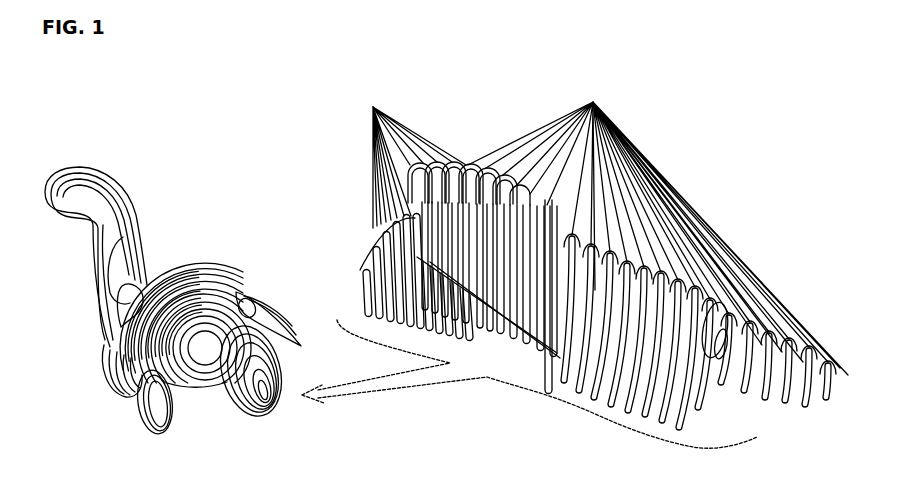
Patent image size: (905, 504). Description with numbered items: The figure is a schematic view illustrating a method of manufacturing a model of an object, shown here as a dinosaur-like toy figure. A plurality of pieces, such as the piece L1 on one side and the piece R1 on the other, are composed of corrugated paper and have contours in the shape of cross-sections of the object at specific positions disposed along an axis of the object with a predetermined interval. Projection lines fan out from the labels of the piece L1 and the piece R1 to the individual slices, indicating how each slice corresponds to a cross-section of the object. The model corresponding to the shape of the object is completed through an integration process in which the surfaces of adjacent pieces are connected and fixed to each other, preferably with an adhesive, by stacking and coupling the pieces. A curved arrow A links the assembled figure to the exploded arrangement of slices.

The direction of slicing/rotation arrow A is at (177, 237).
The piece L1 is at (401, 159).
The piece R1 is at (658, 227).